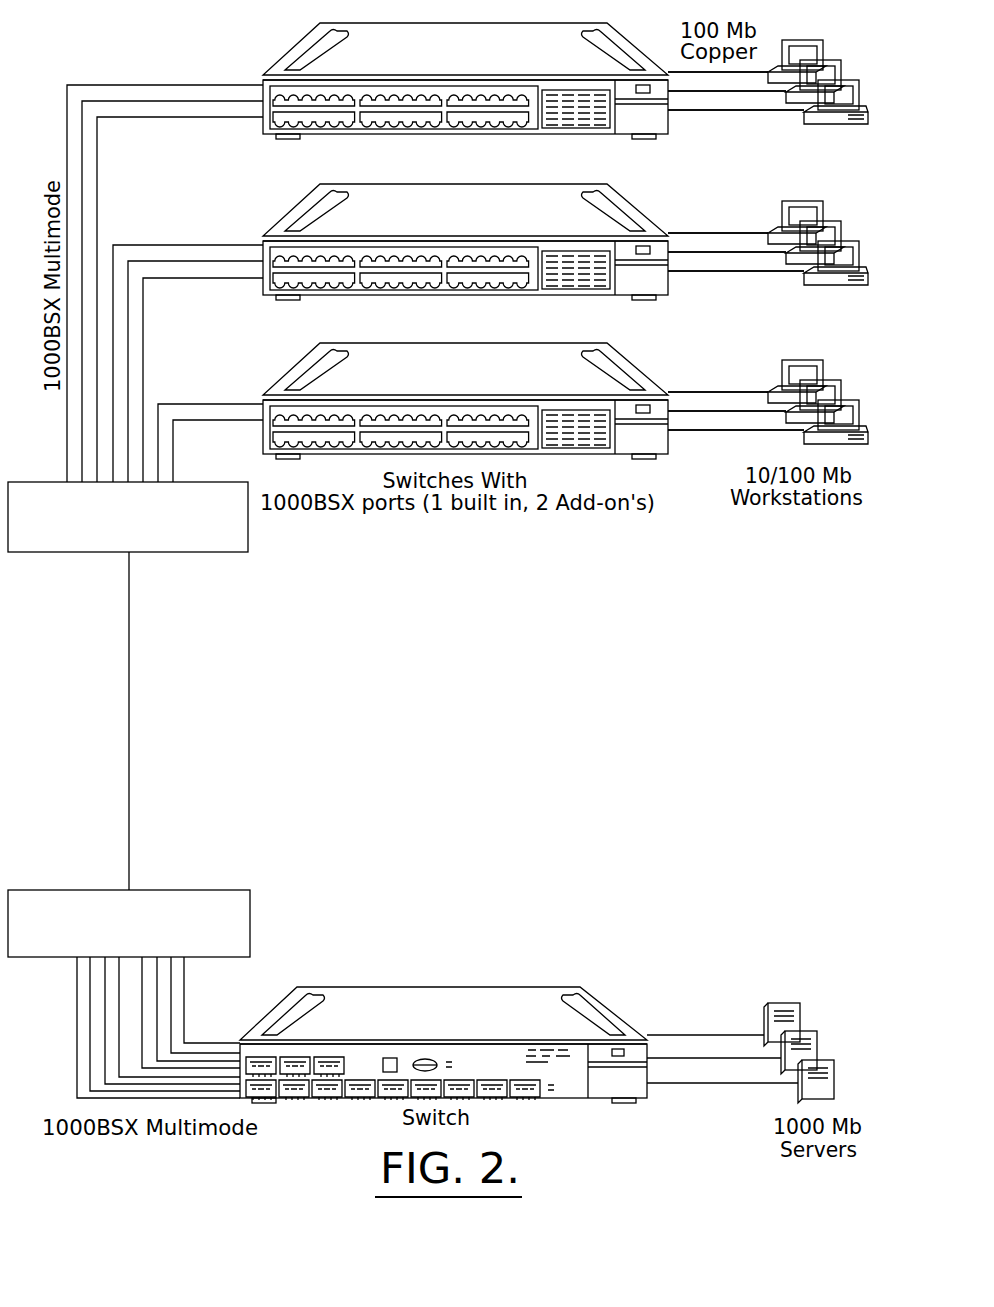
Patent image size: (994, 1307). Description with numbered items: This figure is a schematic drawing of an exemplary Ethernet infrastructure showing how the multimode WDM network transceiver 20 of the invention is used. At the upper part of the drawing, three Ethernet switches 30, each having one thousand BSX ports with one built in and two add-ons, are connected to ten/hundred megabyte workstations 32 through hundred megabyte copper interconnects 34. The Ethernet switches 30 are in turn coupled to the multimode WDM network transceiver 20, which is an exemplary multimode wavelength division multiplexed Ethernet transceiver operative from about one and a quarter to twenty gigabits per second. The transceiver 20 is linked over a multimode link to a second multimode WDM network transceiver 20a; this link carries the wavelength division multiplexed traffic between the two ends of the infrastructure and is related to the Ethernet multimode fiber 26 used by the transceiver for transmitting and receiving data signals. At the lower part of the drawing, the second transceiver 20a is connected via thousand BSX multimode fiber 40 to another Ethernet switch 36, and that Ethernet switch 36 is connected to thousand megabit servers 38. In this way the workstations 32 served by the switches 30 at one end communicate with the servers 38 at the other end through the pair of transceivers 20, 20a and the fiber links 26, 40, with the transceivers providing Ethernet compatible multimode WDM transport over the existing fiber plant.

The multimode WDM network transceiver 20 is at (207, 482).
The second multimode WDM network transceiver 20a is at (210, 890).
The 1.25 Gb/s Ethernet multimode fiber 26 is at (130, 604).
The Ethernet switches 30 is at (447, 57).
The 10/100 megabyte workstations 32 is at (803, 42).
The 100 megabyte copper interconnects 34 is at (732, 112).
The Ethernet switch 36 is at (446, 1020).
The 1000 Mb servers 38 is at (795, 1008).
The 1000 BSX multimode fiber 40 is at (97, 226).